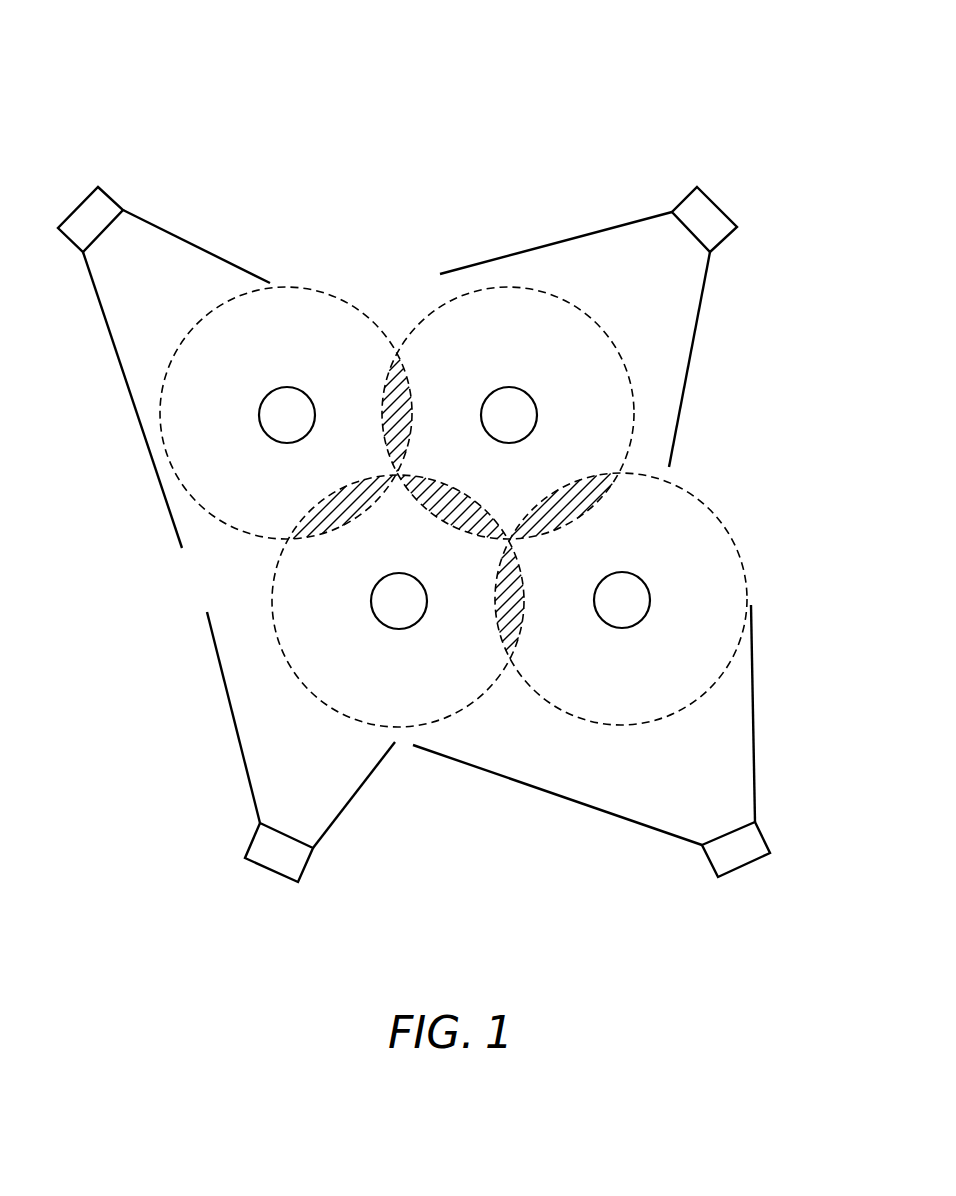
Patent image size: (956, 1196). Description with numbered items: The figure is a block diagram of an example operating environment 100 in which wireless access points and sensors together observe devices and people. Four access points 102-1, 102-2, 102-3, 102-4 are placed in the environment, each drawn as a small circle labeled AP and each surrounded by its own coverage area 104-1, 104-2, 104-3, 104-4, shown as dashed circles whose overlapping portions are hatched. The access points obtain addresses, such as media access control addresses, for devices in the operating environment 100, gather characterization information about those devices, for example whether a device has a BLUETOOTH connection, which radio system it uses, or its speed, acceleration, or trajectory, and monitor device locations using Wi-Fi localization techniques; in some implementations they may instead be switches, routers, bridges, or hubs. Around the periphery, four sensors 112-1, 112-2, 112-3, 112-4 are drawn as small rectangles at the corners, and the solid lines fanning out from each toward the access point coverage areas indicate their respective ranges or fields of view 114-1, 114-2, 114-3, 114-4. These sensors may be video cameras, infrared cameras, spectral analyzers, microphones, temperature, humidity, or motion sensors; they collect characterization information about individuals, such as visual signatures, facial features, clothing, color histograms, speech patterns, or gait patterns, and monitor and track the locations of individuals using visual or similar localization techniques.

The operating environment 100 is at (250, 50).
The access point 102-1 is at (288, 387).
The access point 102-2 is at (510, 387).
The access point 102-3 is at (399, 573).
The access point 102-4 is at (622, 572).
The coverage area 104-1 is at (345, 297).
The coverage area 104-2 is at (540, 290).
The coverage area 104-3 is at (272, 608).
The coverage area 104-4 is at (698, 500).
The sensor 112-1 is at (112, 196).
The sensor 112-2 is at (715, 205).
The sensor 112-3 is at (307, 865).
The sensor 112-4 is at (708, 863).
The range 114-1 is at (123, 385).
The range 114-2 is at (592, 240).
The range 114-3 is at (230, 710).
The range 114-4 is at (752, 660).